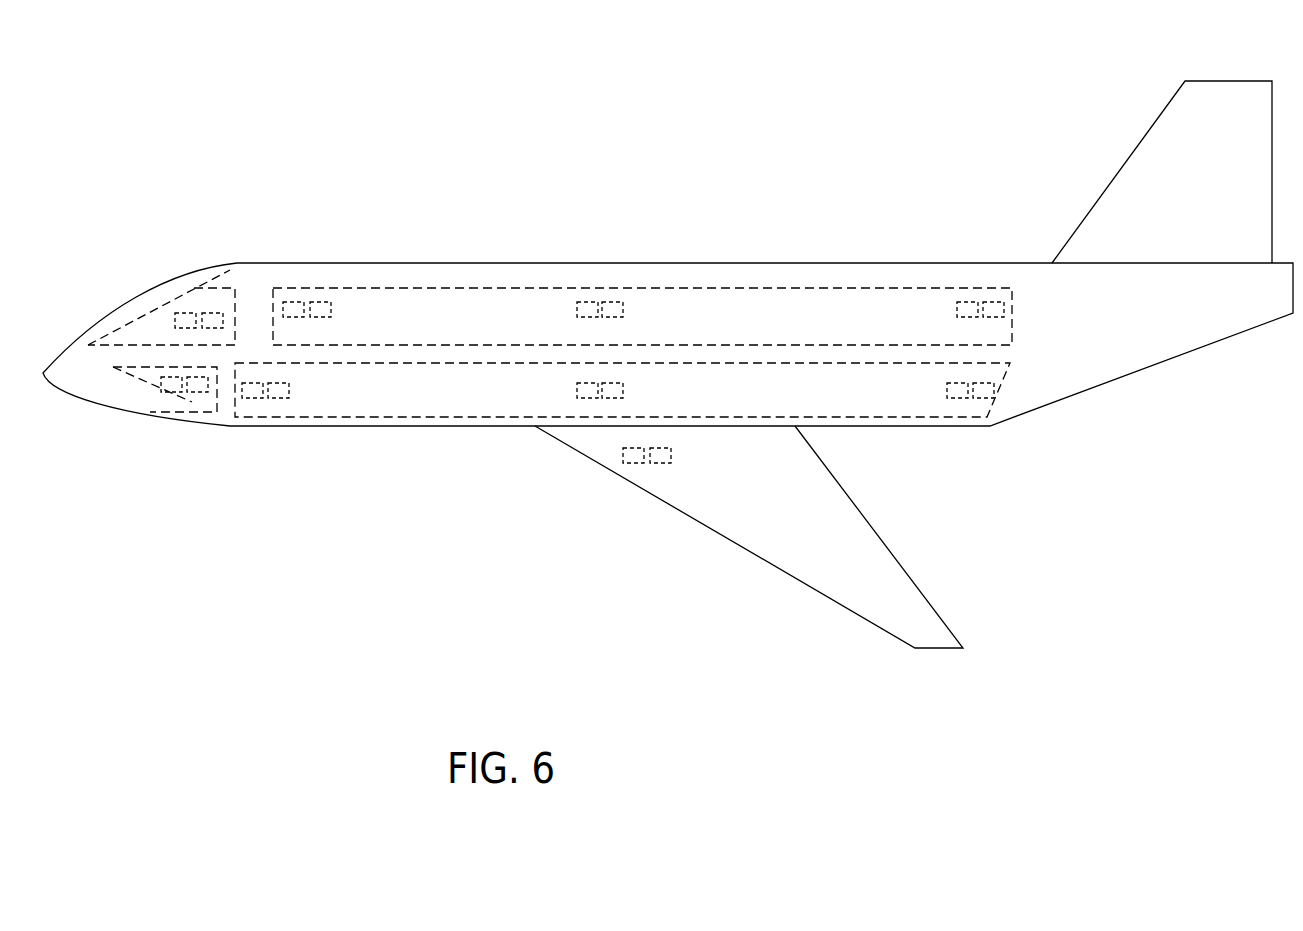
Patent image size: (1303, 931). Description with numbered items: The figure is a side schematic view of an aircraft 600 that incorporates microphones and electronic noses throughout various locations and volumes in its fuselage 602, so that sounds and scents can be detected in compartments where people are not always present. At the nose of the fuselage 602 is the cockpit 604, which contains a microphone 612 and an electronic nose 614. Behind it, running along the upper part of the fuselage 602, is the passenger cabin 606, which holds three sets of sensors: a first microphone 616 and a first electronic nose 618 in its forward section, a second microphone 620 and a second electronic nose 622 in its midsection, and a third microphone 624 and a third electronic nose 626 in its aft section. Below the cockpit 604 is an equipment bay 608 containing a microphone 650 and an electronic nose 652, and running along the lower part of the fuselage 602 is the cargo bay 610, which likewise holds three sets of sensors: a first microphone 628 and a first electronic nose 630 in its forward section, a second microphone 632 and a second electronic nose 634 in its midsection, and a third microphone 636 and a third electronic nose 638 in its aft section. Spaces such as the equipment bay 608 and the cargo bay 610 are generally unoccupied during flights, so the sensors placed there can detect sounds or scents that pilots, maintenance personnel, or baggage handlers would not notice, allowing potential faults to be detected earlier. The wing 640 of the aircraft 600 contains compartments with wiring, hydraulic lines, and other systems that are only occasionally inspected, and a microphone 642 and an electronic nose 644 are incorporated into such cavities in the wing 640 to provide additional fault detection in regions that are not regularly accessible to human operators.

The aircraft 600 is at (158, 96).
The fuselage 602 is at (808, 263).
The cockpit 604 is at (203, 297).
The passenger cabin 606 is at (518, 303).
The equipment bay 608 is at (190, 402).
The cargo bay 610 is at (395, 403).
The microphone 612 is at (185, 318).
The electronic nose 614 is at (215, 318).
The first microphone 616 is at (295, 307).
The first electronic nose 618 is at (325, 307).
The second microphone 620 is at (587, 310).
The second electronic nose 622 is at (614, 310).
The third microphone 624 is at (965, 310).
The third electronic nose 626 is at (990, 302).
The first microphone 628 is at (252, 390).
The first electronic nose 630 is at (277, 390).
The second microphone 632 is at (588, 392).
The second electronic nose 634 is at (607, 388).
The third microphone 636 is at (950, 388).
The third electronic nose 638 is at (985, 392).
The wing 640 is at (753, 520).
The microphone 642 is at (636, 464).
The electronic nose 644 is at (659, 464).
The microphone 650 is at (170, 383).
The electronic nose 652 is at (198, 388).